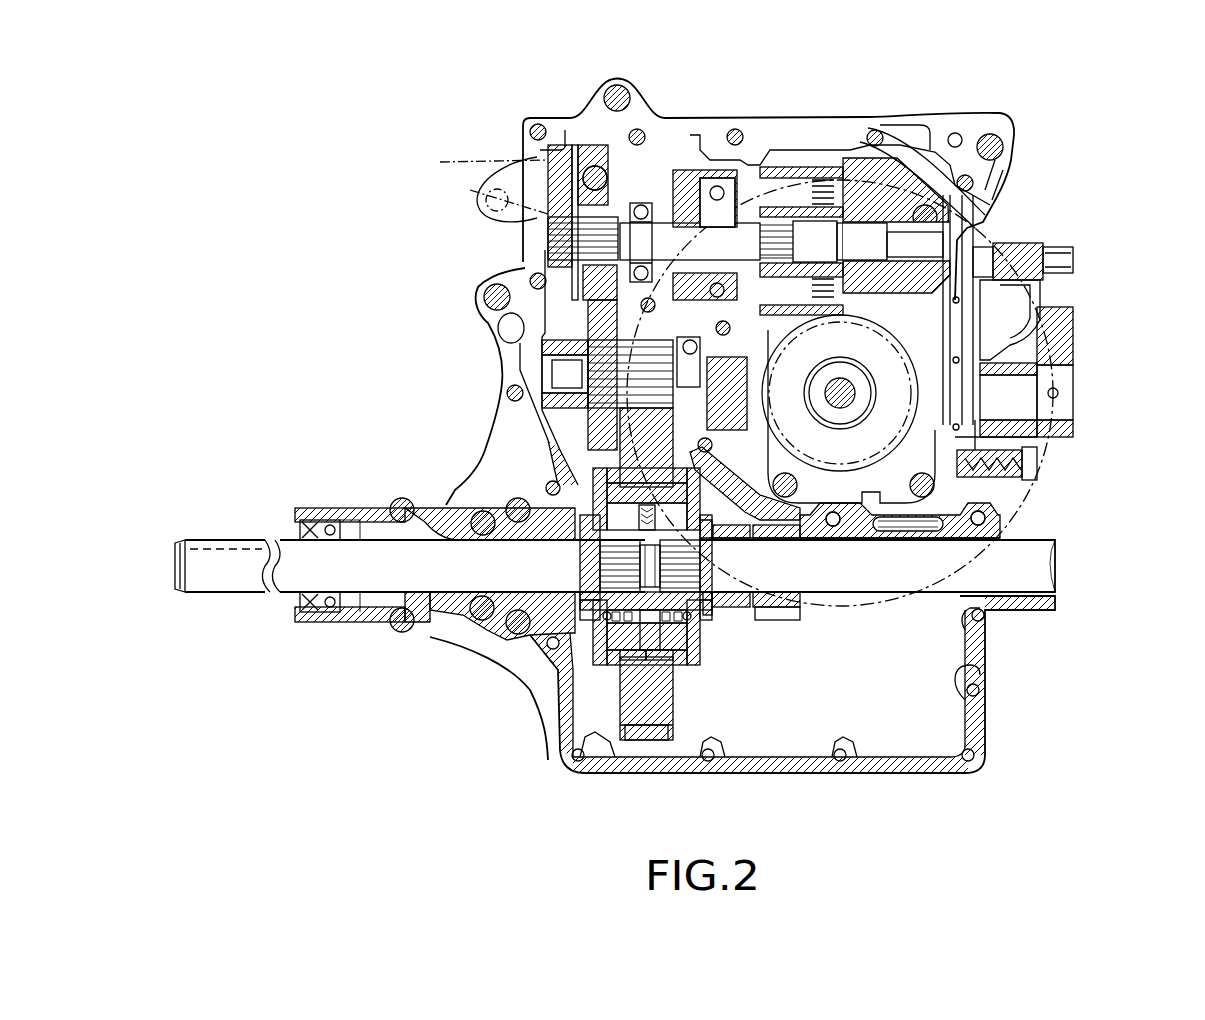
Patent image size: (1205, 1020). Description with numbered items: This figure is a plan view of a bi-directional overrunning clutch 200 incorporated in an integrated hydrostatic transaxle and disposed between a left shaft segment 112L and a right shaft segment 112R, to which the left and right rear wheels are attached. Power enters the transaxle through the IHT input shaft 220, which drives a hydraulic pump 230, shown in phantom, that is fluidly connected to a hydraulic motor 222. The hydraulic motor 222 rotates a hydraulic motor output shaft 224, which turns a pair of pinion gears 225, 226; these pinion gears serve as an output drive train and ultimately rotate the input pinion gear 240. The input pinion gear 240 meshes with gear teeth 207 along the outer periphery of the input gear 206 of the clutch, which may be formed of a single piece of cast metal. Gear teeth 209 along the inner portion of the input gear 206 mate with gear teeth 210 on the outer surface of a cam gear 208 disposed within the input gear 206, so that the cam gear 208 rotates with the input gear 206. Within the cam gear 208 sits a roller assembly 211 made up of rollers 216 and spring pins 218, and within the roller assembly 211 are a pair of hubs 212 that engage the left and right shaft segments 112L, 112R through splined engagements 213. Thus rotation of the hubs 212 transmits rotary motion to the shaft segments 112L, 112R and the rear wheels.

The left shaft segment 112L is at (442, 577).
The right shaft segment 112R is at (1032, 567).
The bi-directional overrunning clutch 200 is at (603, 668).
The input gear 206 is at (647, 707).
The gear teeth 207 is at (663, 733).
The cam gear 208 is at (612, 487).
The gear teeth 209 is at (628, 650).
The gear teeth 210 is at (647, 660).
The roller assembly 211 is at (652, 635).
The hubs 212 is at (540, 647).
The splined engagements 213 is at (695, 620).
The rollers 216 is at (625, 518).
The spring pins 218 is at (680, 630).
The IHT input shaft 220 is at (857, 393).
The hydraulic motor 222 is at (805, 150).
The hydraulic motor output shaft 224 is at (663, 237).
The pinion gear 225 is at (596, 255).
The pinion gear 226 is at (582, 310).
The hydraulic pump 230 is at (985, 232).
The input pinion gear 240 is at (620, 438).